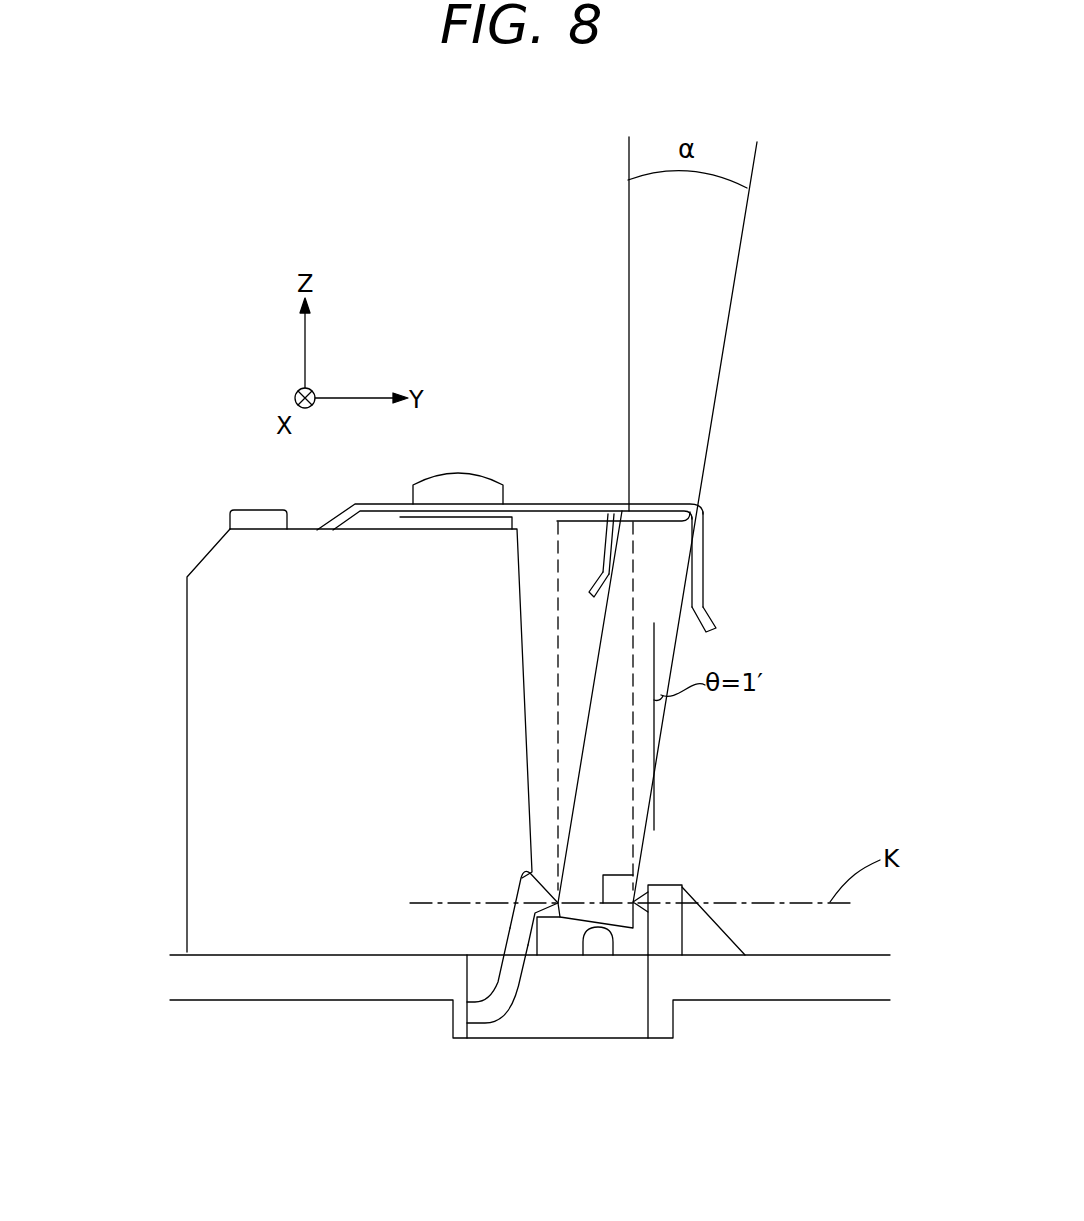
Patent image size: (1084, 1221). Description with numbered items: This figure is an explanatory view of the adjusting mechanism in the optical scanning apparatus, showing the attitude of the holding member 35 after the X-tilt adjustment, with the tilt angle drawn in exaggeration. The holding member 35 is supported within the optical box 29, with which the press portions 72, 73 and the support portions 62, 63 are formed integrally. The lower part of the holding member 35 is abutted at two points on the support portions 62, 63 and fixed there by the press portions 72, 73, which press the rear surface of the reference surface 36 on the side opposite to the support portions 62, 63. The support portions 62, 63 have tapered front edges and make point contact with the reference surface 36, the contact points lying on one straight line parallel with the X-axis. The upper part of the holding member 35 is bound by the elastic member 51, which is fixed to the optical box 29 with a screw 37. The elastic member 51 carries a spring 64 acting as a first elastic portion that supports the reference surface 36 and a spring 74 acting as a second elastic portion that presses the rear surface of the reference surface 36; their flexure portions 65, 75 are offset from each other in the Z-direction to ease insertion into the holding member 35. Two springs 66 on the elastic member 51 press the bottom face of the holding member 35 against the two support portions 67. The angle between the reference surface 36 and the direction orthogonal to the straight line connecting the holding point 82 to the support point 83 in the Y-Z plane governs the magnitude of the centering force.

The optical box 29 is at (208, 835).
The holding member 35 is at (668, 568).
The reference surface 36 is at (665, 713).
The screw 37 is at (468, 493).
The elastic member 51 is at (622, 505).
The support portion 62 is at (736, 993).
The support portion 63 is at (648, 912).
The spring 64 is at (702, 577).
The flexure portion 65 is at (705, 605).
The spring 66 is at (683, 500).
The support portion 67 is at (600, 942).
The press portion 72 is at (324, 805).
The press portion 73 is at (523, 877).
The spring 74 is at (608, 545).
The flexure portion 75 is at (603, 567).
The holding point 82 is at (324, 885).
The support point 83 is at (633, 900).